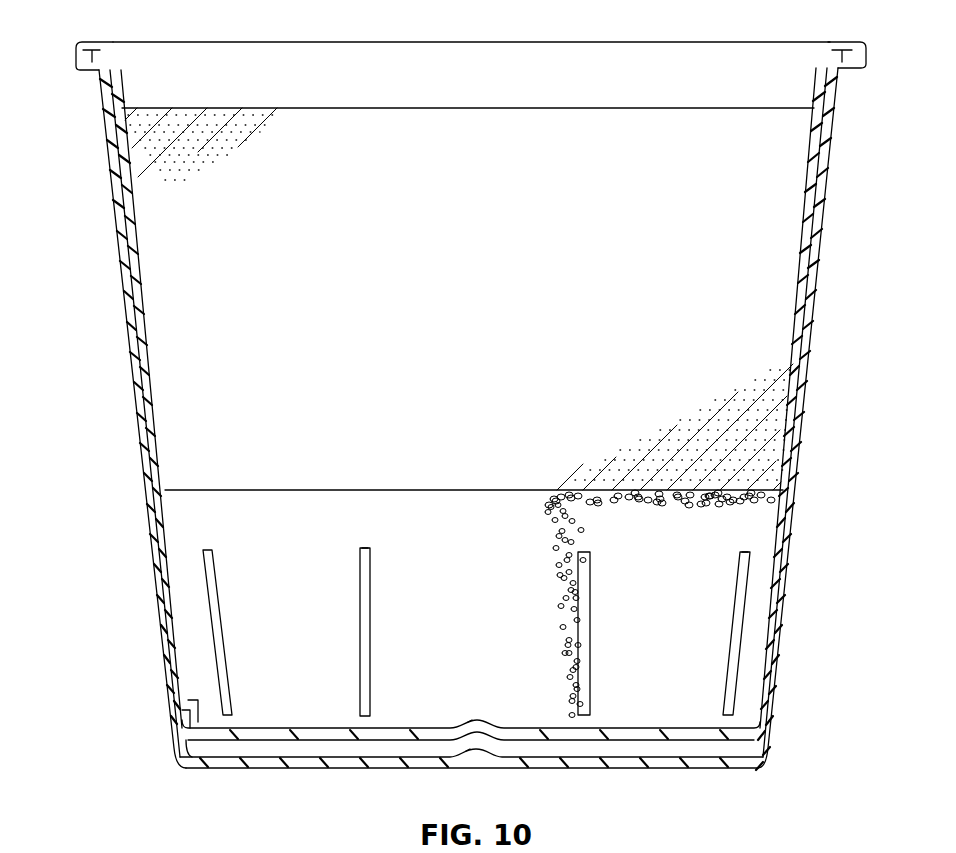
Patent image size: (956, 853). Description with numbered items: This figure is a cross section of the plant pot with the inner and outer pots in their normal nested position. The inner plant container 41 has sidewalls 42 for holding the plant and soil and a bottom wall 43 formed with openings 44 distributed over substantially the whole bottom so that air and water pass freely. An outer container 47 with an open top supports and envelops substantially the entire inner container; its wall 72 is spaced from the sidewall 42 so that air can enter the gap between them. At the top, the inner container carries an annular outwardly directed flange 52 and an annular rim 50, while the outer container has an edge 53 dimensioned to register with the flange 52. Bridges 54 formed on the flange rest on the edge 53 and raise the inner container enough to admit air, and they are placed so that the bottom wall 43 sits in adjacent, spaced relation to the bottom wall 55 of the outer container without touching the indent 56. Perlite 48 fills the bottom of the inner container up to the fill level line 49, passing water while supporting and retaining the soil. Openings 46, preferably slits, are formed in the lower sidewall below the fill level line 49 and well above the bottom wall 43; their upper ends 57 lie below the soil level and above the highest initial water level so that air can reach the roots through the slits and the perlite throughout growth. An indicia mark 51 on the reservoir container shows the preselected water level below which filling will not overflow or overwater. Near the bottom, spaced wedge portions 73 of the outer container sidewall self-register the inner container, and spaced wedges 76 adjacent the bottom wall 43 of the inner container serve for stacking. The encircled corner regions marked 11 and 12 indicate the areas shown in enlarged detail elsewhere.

The section line 11 detail circle 11 is at (159, 777).
The section line 12 detail circle 12 is at (720, 777).
The plant container 41 is at (831, 146).
The sidewalls 42 is at (812, 165).
The bottom wall 43 is at (220, 730).
The openings 44 is at (258, 730).
The openings 46 is at (213, 586).
The outer container 47 is at (829, 246).
The perlite 48 is at (570, 528).
The fill level line 49 is at (456, 490).
The annular rim 50 is at (77, 57).
The indicia mark 51 is at (781, 600).
The flange 52 is at (97, 42).
The edge 53 is at (837, 42).
The bridges 54 is at (88, 70).
The bottom wall 55 is at (306, 757).
The indent 56 is at (468, 750).
The upper ends 57 is at (365, 548).
The wall 72 is at (818, 278).
The wedge portions 73 is at (184, 710).
The wedges 76 is at (194, 688).